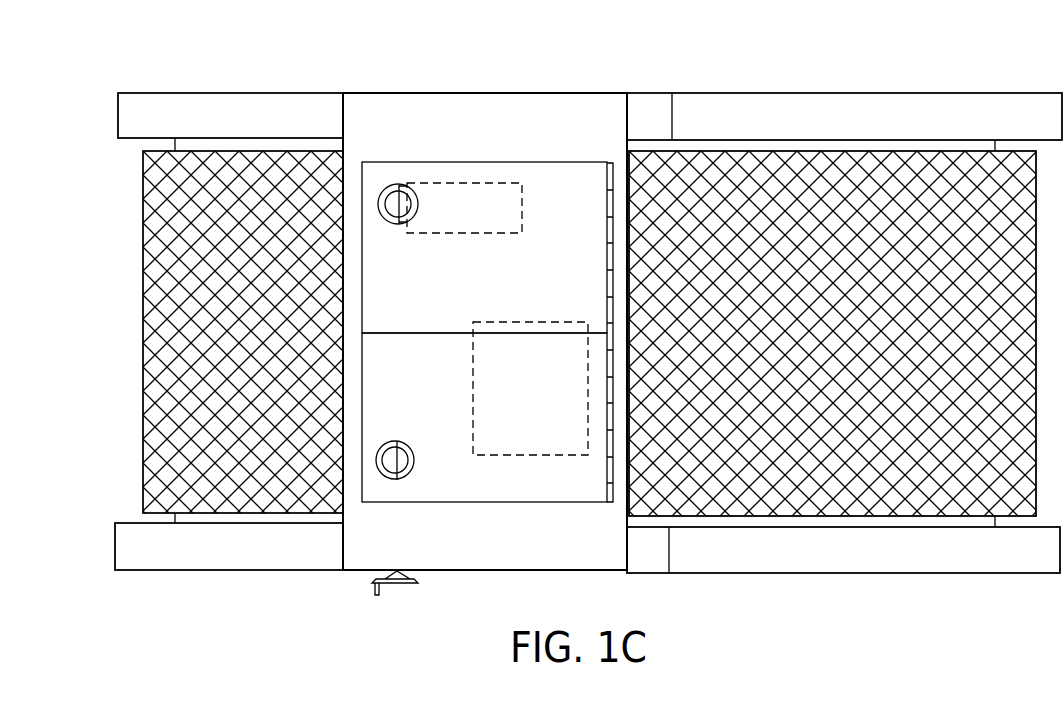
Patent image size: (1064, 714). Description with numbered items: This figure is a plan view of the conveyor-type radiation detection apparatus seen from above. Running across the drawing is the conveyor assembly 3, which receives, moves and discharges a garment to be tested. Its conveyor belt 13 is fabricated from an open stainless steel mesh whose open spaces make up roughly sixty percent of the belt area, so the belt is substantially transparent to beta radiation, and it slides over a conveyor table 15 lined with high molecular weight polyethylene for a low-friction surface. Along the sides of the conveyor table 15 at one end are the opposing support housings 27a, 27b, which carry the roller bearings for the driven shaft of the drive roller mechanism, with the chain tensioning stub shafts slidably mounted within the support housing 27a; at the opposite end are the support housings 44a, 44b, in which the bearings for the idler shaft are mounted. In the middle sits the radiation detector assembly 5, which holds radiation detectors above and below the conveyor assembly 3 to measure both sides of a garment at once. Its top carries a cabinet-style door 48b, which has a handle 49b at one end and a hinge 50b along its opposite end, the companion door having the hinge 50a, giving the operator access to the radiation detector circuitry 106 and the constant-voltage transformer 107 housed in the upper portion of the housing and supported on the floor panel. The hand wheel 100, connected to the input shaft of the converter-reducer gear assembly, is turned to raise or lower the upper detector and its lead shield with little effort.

The conveyor assembly 3 is at (123, 212).
The radiation detector assembly 5 is at (558, 83).
The conveyor belt 13 is at (175, 340).
The conveyor table 15 is at (258, 148).
The support housing 27a is at (208, 547).
The support housing 27b is at (213, 117).
The support housing 44a is at (938, 548).
The support housing 44b is at (935, 118).
The cabinet-style door 48b is at (444, 379).
The handle 49b is at (444, 309).
The hinge 50a is at (604, 462).
The hinge 50b is at (606, 263).
The hand wheel 100 is at (392, 586).
The radiation detector circuitry 106 is at (516, 436).
The constant-voltage transformer 107 is at (507, 212).